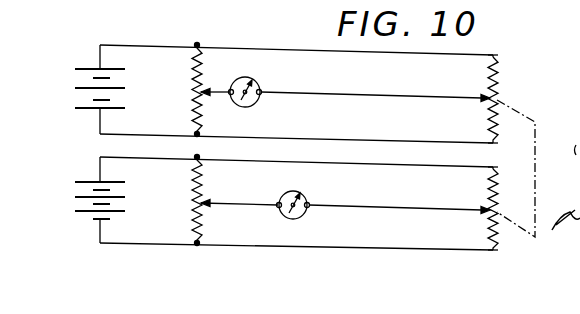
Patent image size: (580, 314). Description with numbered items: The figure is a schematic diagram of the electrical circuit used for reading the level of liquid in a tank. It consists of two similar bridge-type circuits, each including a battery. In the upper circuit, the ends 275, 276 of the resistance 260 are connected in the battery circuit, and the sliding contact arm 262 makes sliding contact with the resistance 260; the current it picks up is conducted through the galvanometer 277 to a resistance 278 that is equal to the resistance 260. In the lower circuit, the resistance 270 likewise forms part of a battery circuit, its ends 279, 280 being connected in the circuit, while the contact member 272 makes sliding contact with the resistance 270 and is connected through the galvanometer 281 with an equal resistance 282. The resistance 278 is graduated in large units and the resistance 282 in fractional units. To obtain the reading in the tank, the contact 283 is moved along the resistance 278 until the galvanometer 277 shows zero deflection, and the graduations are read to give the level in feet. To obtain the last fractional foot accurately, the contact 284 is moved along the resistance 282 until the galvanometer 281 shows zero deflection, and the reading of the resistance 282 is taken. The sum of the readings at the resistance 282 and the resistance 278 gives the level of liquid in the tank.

The resistance 260 is at (498, 86).
The sliding contact arm 262 is at (484, 96).
The resistance 270 is at (495, 176).
The contact member 272 is at (485, 208).
The end of resistance 275 is at (493, 55).
The end of resistance 276 is at (493, 141).
The galvanometer 277 is at (256, 84).
The resistance 278 is at (192, 69).
The end of resistance 279 is at (491, 168).
The end of resistance 280 is at (492, 250).
The galvanometer 281 is at (303, 196).
The resistance 282 is at (201, 187).
The contact 283 is at (203, 90).
The contact 284 is at (205, 205).